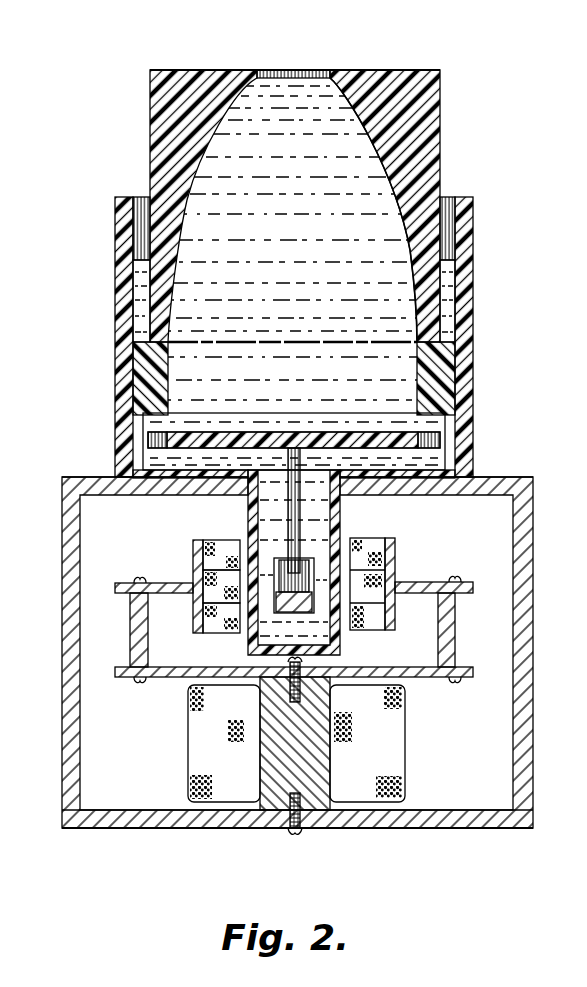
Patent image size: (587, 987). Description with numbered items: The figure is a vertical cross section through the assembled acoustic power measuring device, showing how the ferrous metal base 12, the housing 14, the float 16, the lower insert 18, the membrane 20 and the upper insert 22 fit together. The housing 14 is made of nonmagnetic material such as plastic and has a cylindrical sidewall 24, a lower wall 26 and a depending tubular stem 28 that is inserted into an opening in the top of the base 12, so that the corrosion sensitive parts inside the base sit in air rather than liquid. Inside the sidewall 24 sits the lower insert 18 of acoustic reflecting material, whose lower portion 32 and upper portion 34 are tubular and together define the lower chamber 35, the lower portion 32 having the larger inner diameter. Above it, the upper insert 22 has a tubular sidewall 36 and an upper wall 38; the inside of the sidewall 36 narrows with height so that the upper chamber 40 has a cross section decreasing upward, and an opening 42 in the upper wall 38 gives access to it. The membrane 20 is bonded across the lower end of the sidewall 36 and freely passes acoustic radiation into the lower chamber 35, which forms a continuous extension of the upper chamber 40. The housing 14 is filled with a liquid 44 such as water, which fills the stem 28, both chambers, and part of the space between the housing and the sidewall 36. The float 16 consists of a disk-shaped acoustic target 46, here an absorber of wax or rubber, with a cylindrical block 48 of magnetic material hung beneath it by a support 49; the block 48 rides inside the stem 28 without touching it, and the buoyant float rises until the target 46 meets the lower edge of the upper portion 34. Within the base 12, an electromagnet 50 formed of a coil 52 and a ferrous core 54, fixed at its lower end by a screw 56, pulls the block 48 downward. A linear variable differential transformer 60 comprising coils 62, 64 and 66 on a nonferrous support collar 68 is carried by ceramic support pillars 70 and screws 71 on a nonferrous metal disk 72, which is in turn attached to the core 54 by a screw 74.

The ferrous metal base 12 is at (60, 541).
The housing 14 is at (112, 368).
The float 16 is at (336, 428).
The lower insert 18 is at (132, 389).
The membrane 20 is at (252, 340).
The upper insert 22 is at (147, 133).
The cylindrical sidewall 24 is at (455, 290).
The lower wall 26 is at (134, 471).
The tubular stem 28 is at (248, 512).
The lower portion 32 is at (450, 456).
The upper portion 34 is at (452, 361).
The lower chamber 35 is at (302, 416).
The tubular sidewall 36 is at (425, 238).
The upper wall 38 is at (378, 70).
The upper chamber 40 is at (306, 207).
The opening 42 is at (279, 69).
The liquid 44 is at (360, 183).
The acoustic target 46 is at (395, 428).
The block of magnetic material 48 is at (298, 567).
The support 49 is at (308, 490).
The electromagnet 50 is at (180, 745).
The coil 52 is at (213, 720).
The ferrous core 54 is at (258, 830).
The screw 56 is at (297, 835).
The linear variable differential transformer 60 is at (190, 555).
The coil 62 is at (209, 540).
The coil 64 is at (206, 582).
The coil 66 is at (220, 634).
The support collar 68 is at (398, 584).
The ceramic support pillars 70 is at (139, 631).
The screws 71 is at (137, 579).
The nonferrous metal disk 72 is at (466, 672).
The screw 74 is at (300, 665).